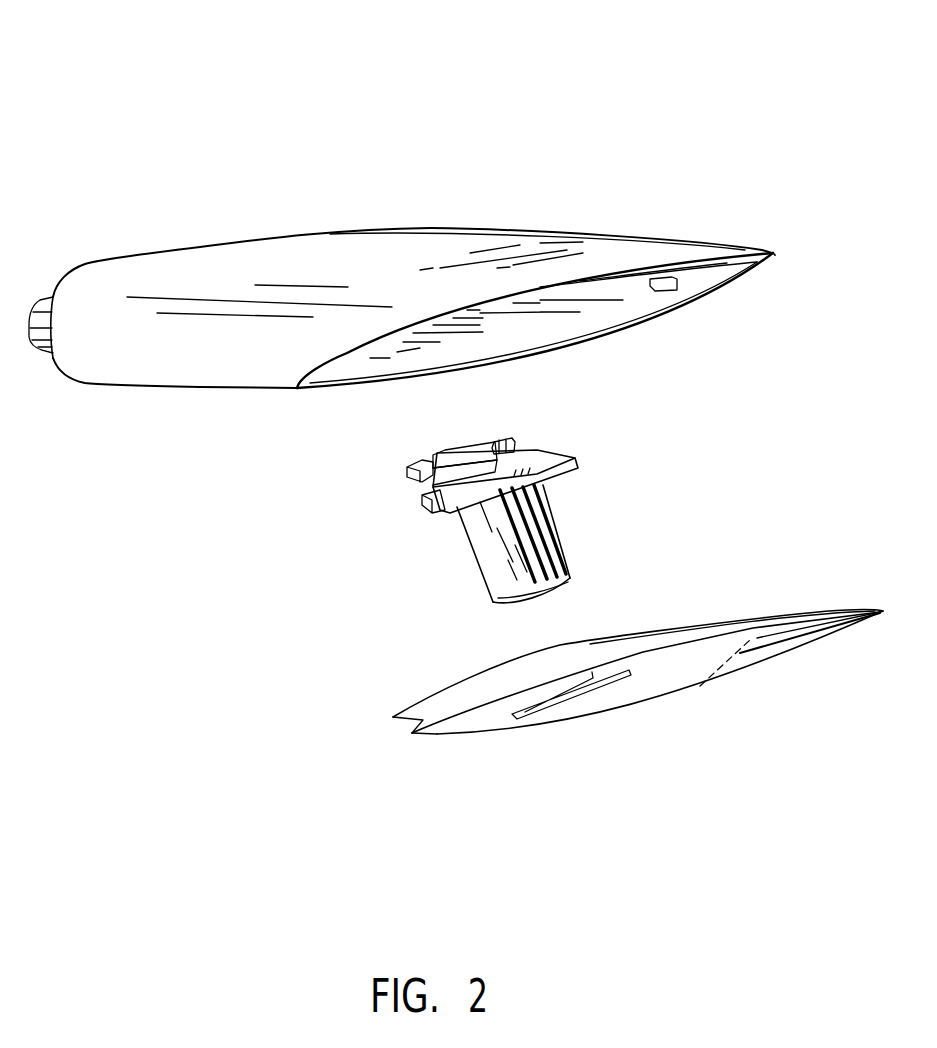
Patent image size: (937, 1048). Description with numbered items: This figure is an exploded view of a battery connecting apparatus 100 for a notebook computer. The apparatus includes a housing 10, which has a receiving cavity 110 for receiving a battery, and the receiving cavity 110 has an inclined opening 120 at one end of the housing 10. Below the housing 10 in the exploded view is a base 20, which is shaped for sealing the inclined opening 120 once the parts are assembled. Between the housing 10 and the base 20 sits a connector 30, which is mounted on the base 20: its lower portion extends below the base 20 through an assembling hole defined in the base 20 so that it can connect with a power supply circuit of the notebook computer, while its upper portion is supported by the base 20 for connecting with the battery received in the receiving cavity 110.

The battery connecting apparatus 100 is at (130, 71).
The housing 10 is at (527, 255).
The receiving cavity 110 is at (540, 310).
The inclined opening 120 is at (580, 315).
The connector 30 is at (372, 498).
The base 20 is at (740, 653).